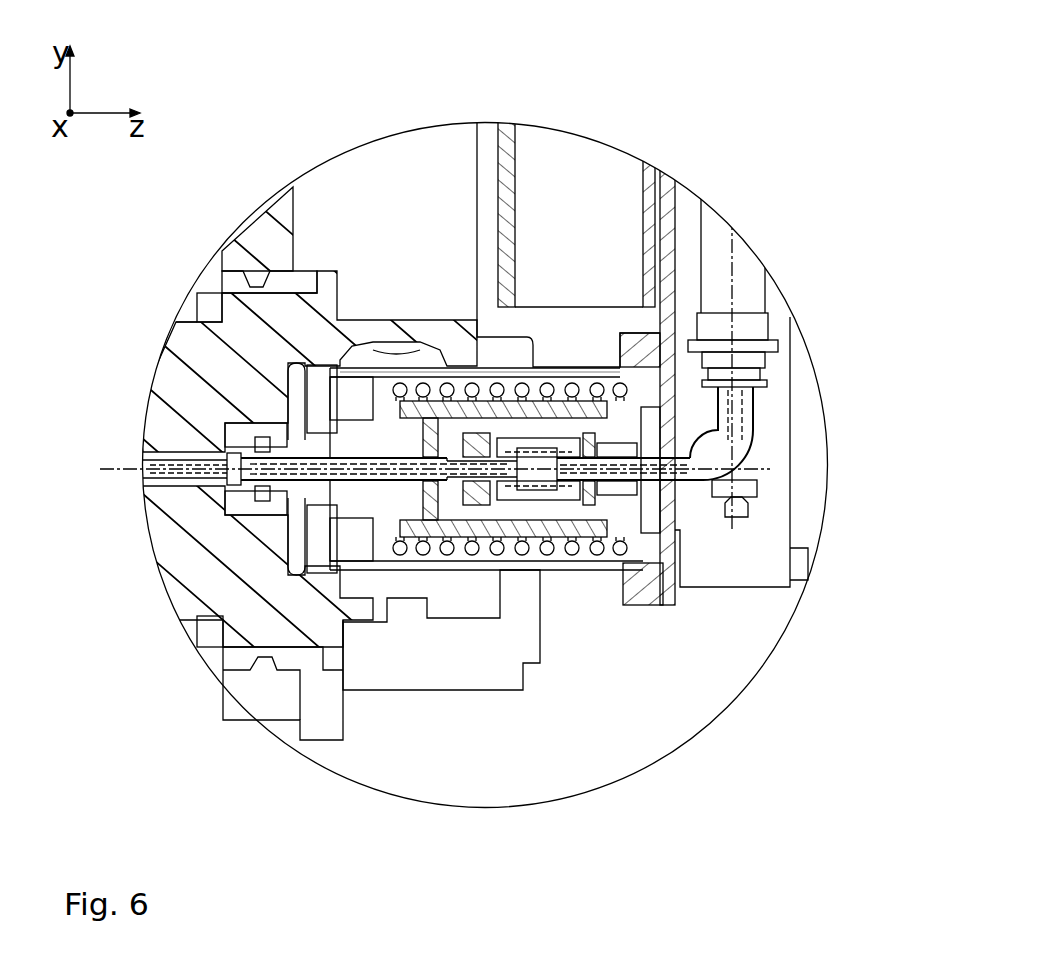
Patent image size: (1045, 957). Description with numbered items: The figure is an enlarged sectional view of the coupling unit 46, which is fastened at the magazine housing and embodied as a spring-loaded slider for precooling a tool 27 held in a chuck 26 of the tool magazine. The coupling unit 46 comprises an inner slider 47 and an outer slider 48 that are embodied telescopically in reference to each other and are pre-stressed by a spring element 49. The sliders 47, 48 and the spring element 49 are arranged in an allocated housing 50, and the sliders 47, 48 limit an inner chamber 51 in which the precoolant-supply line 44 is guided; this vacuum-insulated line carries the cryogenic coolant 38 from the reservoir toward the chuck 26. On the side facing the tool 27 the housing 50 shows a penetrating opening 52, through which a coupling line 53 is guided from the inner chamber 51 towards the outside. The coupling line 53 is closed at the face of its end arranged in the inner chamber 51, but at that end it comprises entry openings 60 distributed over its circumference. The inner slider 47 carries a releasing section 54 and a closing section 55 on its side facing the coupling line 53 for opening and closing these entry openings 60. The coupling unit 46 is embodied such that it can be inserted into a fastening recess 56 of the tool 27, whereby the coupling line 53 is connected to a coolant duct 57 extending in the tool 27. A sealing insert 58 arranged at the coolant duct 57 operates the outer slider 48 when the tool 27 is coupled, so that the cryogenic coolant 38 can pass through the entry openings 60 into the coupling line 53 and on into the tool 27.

The chuck 26 is at (386, 478).
The tool 27 is at (386, 478).
The cryogenic coolant 38 is at (723, 632).
The precoolant-supply line 44 is at (730, 279).
The coupling unit 46 is at (480, 200).
The inner slider 47 is at (531, 693).
The outer slider 48 is at (460, 655).
The spring element 49 is at (596, 655).
The housing 50 is at (373, 697).
The inner chamber 51 is at (568, 197).
The penetrating opening 52 is at (337, 301).
The coupling line 53 is at (198, 469).
The releasing section 54 is at (503, 274).
The closing section 55 is at (486, 299).
The fastening recess 56 is at (300, 630).
The coolant duct 57 is at (288, 481).
The sealing insert 58 is at (173, 469).
The entry openings 60 is at (600, 662).